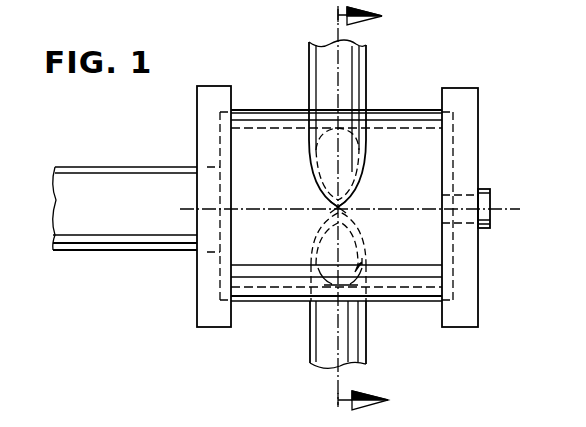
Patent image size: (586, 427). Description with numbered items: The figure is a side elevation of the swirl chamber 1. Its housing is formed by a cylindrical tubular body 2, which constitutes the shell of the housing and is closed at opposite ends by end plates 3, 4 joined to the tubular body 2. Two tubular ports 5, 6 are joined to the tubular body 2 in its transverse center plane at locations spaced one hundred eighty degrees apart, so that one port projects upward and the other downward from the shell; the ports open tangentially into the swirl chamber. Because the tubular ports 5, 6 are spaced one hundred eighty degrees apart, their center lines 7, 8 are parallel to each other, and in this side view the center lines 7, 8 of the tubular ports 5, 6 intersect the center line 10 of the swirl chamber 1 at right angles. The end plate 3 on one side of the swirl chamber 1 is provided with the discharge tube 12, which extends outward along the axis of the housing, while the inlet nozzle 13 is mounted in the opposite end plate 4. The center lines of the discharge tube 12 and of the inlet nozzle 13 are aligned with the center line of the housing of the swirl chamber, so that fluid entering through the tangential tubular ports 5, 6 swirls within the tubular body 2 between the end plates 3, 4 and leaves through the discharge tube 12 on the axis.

The swirl chamber 1 is at (437, 49).
The cylindrical tubular body 2 is at (254, 118).
The end plate 3 is at (196, 118).
The end plate 4 is at (466, 150).
The tubular port 5 is at (310, 343).
The tubular port 6 is at (367, 70).
The center line 7 is at (316, 74).
The center line 8 is at (340, 258).
The center line 10 is at (276, 207).
The discharge tube 12 is at (90, 180).
The inlet nozzle 13 is at (486, 204).